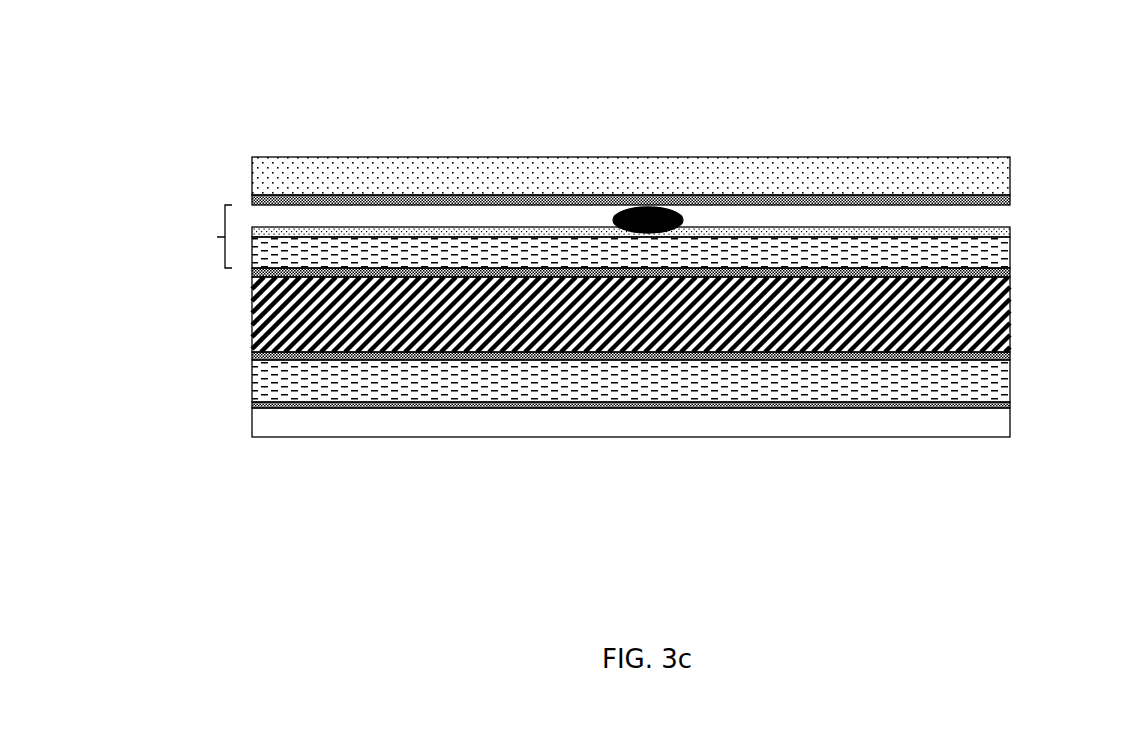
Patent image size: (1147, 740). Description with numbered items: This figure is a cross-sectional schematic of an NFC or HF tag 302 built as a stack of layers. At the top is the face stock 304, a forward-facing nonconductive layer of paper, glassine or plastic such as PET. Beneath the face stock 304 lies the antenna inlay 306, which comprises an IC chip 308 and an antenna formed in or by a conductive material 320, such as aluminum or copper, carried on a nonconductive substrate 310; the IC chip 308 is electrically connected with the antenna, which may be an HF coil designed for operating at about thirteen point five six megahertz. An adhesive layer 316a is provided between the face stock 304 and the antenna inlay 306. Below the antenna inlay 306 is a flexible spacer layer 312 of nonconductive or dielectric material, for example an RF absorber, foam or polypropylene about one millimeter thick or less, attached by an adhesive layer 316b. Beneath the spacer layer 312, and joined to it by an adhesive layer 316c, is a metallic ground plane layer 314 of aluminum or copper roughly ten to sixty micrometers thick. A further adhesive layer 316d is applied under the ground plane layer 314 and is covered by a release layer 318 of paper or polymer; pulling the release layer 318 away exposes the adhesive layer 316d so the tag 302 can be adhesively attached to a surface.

The tag 302 is at (936, 66).
The face stock 304 is at (1012, 157).
The antenna inlay 306 is at (217, 237).
The IC chip 308 is at (622, 206).
The substrate 310 is at (1012, 230).
The spacer layer 312 is at (1012, 312).
The ground plane layer 314 is at (1012, 376).
The adhesive layer 316a is at (1012, 198).
The adhesive layer 316b is at (1012, 268).
The adhesive layer 316c is at (1012, 355).
The adhesive layer 316d is at (1012, 406).
The release layer 318 is at (252, 413).
The conductive material 320 is at (262, 225).